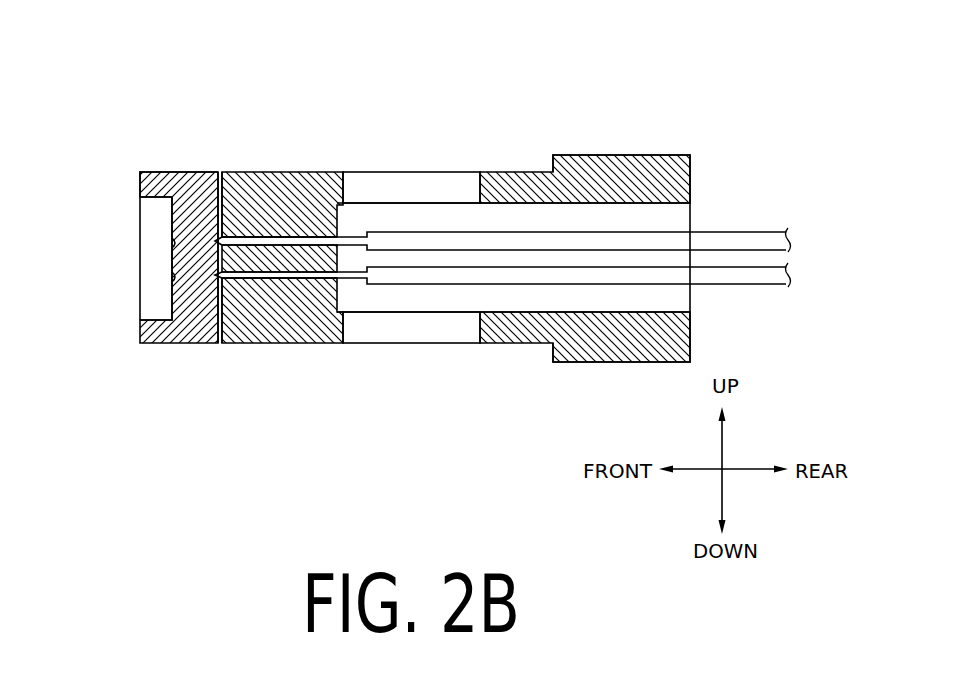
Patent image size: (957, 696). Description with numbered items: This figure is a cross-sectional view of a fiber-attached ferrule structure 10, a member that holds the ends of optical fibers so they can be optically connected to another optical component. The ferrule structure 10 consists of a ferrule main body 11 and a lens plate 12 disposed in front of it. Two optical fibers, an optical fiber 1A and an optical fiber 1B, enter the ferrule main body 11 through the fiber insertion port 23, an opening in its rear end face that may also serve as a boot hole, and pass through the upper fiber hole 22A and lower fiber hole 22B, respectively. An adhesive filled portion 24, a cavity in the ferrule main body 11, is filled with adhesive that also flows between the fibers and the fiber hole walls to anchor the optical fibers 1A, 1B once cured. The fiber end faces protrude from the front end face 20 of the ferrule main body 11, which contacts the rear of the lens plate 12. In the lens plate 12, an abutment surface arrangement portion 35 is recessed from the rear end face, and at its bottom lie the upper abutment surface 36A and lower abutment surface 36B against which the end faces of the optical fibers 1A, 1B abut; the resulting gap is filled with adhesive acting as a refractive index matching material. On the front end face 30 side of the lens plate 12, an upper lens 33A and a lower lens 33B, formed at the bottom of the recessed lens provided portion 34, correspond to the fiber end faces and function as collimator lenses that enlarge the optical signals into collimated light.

The ferrule structure 10 is at (363, 90).
The ferrule main body 11 is at (531, 155).
The lens plate 12 is at (160, 155).
The front end face 20 is at (208, 172).
The fiber hole 22A is at (283, 235).
The fiber hole 22B is at (283, 281).
The fiber insertion port 23 is at (692, 222).
The adhesive filled portion 24 is at (432, 176).
The front end face 30 is at (140, 185).
The upper lens 33A is at (172, 243).
The lower lens 33B is at (172, 277).
The lens provided portion 34 is at (152, 305).
The abutment surface arrangement portion 35 is at (219, 347).
The upper abutment surface 36A is at (243, 232).
The lower abutment surface 36B is at (243, 285).
The optical fiber 1A is at (318, 237).
The optical fiber 1B is at (318, 278).